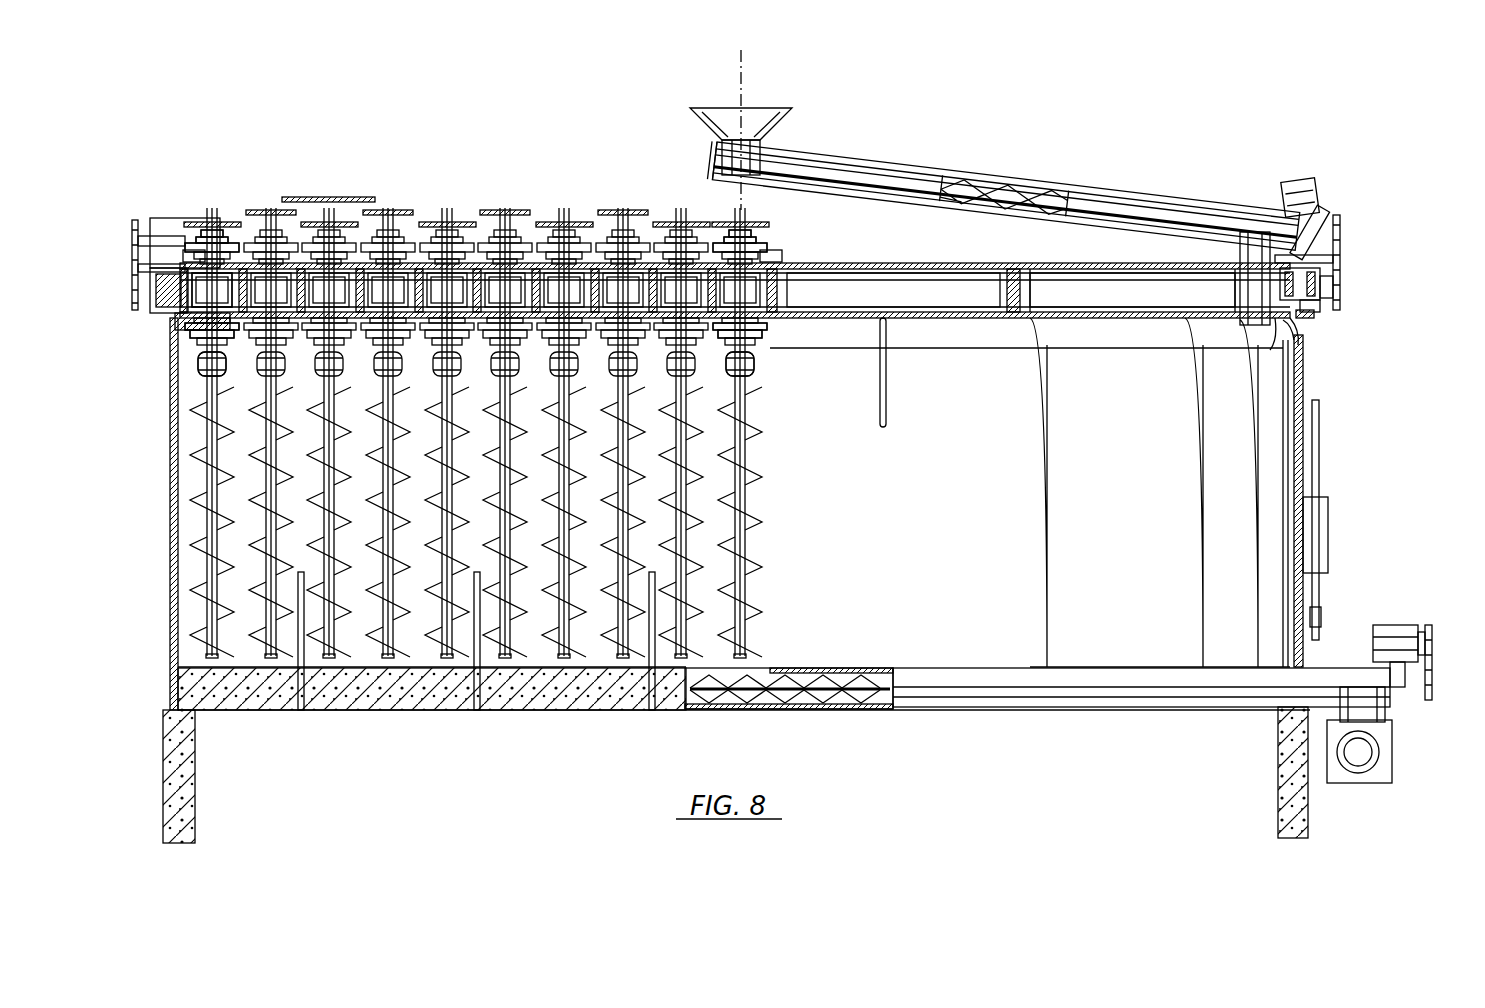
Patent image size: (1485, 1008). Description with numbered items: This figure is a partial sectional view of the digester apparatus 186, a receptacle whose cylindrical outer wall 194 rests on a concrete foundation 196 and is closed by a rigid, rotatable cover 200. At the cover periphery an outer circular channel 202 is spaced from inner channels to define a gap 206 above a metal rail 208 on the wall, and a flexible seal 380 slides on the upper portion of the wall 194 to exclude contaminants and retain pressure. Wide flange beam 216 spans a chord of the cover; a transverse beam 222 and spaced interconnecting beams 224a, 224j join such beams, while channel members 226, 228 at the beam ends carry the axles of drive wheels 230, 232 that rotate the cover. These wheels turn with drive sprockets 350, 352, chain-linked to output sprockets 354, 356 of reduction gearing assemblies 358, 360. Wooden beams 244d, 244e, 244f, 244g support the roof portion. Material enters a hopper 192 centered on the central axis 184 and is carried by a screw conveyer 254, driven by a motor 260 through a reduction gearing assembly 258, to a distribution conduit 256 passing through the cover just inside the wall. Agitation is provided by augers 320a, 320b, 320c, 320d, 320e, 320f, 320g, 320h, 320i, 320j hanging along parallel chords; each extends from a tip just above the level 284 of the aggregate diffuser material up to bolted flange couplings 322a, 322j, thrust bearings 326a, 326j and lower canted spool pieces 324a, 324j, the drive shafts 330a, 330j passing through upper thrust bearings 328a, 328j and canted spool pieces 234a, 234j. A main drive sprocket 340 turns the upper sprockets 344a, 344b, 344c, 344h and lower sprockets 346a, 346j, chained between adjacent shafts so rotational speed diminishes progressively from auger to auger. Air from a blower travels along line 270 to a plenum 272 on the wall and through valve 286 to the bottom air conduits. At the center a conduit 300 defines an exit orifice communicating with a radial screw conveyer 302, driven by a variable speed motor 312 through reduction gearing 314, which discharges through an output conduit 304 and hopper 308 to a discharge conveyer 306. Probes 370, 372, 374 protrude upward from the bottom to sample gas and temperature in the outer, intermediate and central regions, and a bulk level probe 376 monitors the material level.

The central axis 184 is at (745, 68).
The hopper 192 is at (775, 128).
The screw type conveyer 254 is at (878, 166).
The motor 260 is at (1305, 180).
The reduction gearing assembly 258 is at (1325, 212).
The output sprocket 356 is at (1340, 230).
The reduction gearing assembly 360 is at (1333, 259).
The gap 206 is at (1322, 276).
The drive sprocket 352 is at (1335, 290).
The outer circular form channel 202 is at (138, 268).
The drive wheel 232 is at (1312, 317).
The metal rail 208 is at (1300, 335).
The flexible seal 380 is at (1272, 335).
The distribution conduit 256 is at (1255, 258).
The channel member 228 is at (1262, 293).
The transverse beam 222 is at (1018, 292).
The wide flange beam 216 is at (1137, 318).
The rigid cover 200 is at (908, 263).
The outer wall 194 is at (170, 560).
The line 270 is at (1320, 466).
The plenum 272 is at (1328, 522).
The valve 286 is at (1322, 610).
The variable speed motor 312 is at (1400, 625).
The reduction gearing assembly 314 is at (1400, 700).
The output conduit 304 is at (1385, 720).
The hopper 308 is at (1392, 774).
The screw type discharge conveyer 306 is at (1352, 772).
The cylindrical foundation 196 is at (194, 812).
The screw conveyer 302 is at (1070, 668).
The conduit 300 is at (758, 668).
The digester apparatus 186 is at (1024, 783).
The probe 370 is at (318, 712).
The probe 372 is at (493, 712).
The probe 374 is at (666, 712).
The level of diffuser material 284 is at (182, 660).
The auger 320a is at (192, 470).
The auger 320b is at (271, 395).
The auger 320c is at (329, 395).
The auger 320d is at (388, 395).
The auger 320e is at (447, 395).
The auger 320f is at (505, 395).
The auger 320g is at (564, 395).
The auger 320h is at (623, 395).
The auger 320i is at (681, 395).
The auger 320j is at (748, 456).
The bulk level probe 376 is at (887, 386).
The spool piece 234a is at (150, 256).
The spool piece 234j is at (778, 262).
The interconnecting beam 224a is at (236, 310).
The interconnecting beam 224j is at (780, 292).
The lower canted spool piece 324a is at (190, 328).
The lower canted spool piece 324j is at (765, 326).
The thrust bearing 326a is at (195, 340).
The thrust bearing 326j is at (762, 342).
The bolted flange coupling 322a is at (200, 365).
The bolted flange coupling 322j is at (755, 366).
The lower sprocket 346a is at (222, 237).
The lower sprocket 346j is at (755, 238).
The thrust bearing 328a is at (215, 243).
The thrust bearing 328j is at (766, 246).
The drive shaft 330a is at (225, 230).
The drive shaft 330j is at (740, 230).
The upper sprocket 344a is at (256, 210).
The upper sprocket 344b is at (330, 222).
The upper sprocket 344c is at (390, 210).
The upper sprocket 344h is at (690, 222).
The wooden beam 244d is at (447, 222).
The wooden beam 244e is at (505, 210).
The wooden beam 244f is at (564, 222).
The wooden beam 244g is at (623, 210).
The main drive sprocket 340 is at (356, 197).
The reduction gearing assembly 358 is at (152, 225).
The drive sprocket 350 is at (132, 232).
The channel member 226 is at (140, 288).
The output sprocket 354 is at (150, 300).
The drive wheel 230 is at (178, 315).